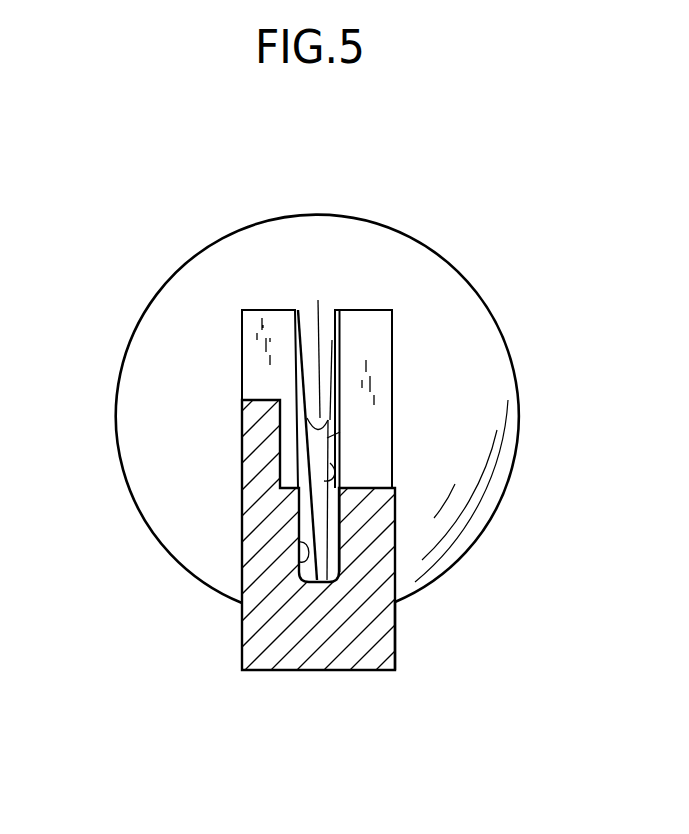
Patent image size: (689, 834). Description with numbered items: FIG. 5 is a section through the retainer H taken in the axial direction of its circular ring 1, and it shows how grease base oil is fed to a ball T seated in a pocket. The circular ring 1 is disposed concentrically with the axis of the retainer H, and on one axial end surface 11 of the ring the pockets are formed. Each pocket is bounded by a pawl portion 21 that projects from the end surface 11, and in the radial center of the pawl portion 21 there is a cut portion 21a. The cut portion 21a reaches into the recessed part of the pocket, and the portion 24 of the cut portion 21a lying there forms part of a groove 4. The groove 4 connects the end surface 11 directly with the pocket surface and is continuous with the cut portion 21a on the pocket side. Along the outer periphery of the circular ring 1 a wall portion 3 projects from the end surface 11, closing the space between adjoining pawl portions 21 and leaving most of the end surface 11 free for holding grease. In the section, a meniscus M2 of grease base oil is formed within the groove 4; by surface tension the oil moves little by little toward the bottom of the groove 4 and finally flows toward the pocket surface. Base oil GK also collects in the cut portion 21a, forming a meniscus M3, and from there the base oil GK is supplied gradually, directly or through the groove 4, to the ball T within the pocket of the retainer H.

The circular ring 1 is at (243, 630).
The wall portion 3 is at (262, 418).
The groove 4 is at (299, 542).
The end surface 11 is at (392, 472).
The pawl portion 21 is at (362, 327).
The cut portion 21a is at (332, 340).
The portion of the cut portion 24 is at (330, 463).
The meniscus M2 is at (315, 503).
The meniscus M3 is at (318, 300).
The base oil GK is at (327, 438).
The ball T is at (200, 251).
The retainer H is at (401, 632).